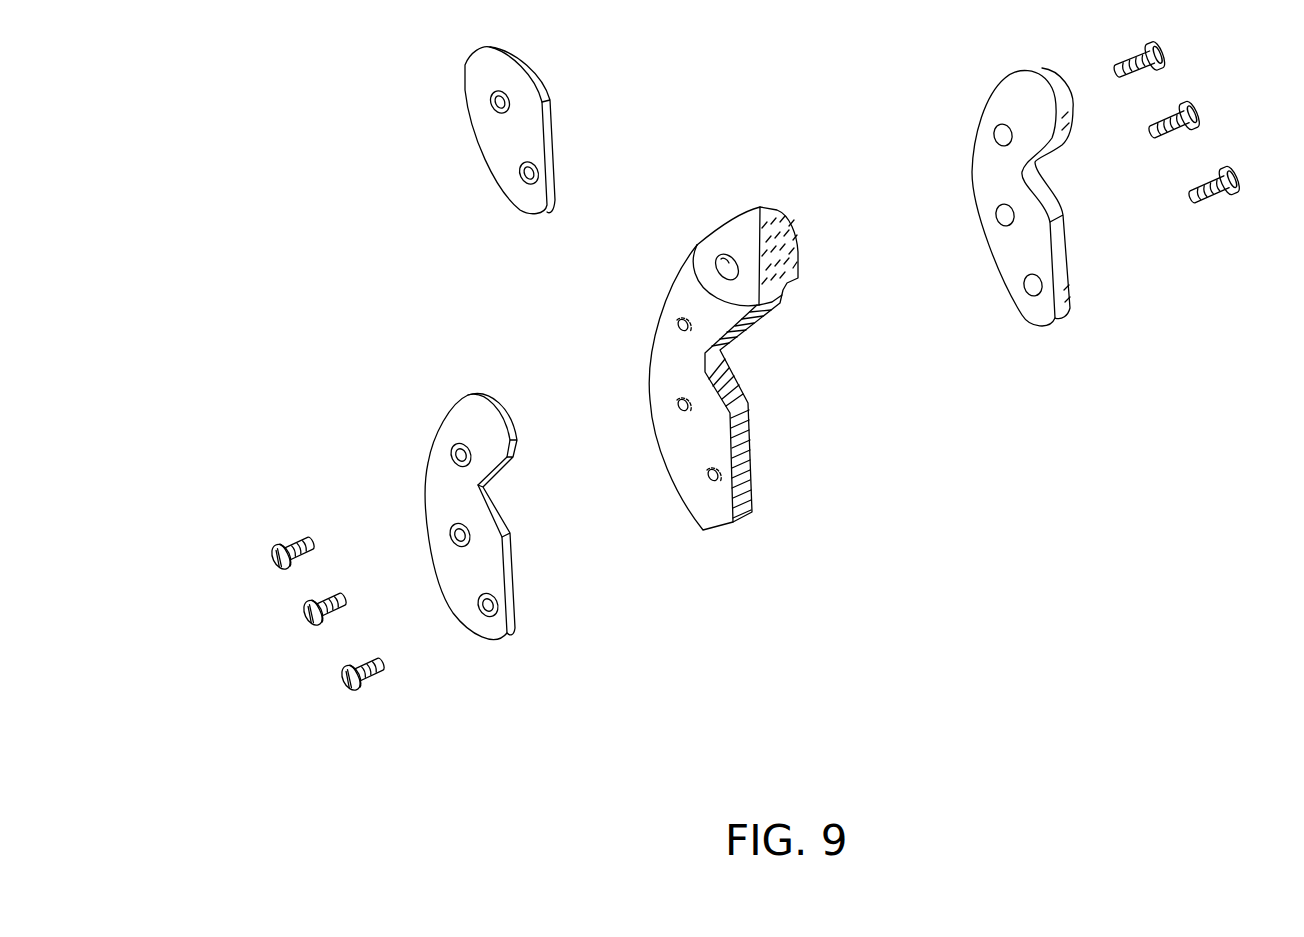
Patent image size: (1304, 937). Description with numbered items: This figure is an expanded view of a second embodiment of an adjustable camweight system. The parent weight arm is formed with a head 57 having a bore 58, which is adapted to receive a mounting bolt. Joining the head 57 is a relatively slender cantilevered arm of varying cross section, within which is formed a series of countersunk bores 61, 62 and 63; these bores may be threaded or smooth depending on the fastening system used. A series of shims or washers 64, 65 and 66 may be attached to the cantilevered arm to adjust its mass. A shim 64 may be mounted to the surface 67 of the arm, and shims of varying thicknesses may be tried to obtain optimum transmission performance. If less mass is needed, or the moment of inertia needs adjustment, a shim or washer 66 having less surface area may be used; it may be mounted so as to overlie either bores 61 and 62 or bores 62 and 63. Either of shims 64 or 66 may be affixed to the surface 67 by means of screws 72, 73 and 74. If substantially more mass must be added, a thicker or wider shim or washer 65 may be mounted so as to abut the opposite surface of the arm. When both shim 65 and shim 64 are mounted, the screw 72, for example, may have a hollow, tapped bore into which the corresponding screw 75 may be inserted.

The head 57 is at (752, 230).
The bore 58 is at (725, 258).
The countersunk bore 61 is at (720, 477).
The countersunk bore 62 is at (677, 405).
The countersunk bore 63 is at (676, 325).
The shim 64 is at (443, 470).
The shim 65 is at (1005, 95).
The shim 66 is at (484, 64).
The surface 67 is at (688, 443).
The screw 72 is at (377, 683).
The screw 73 is at (303, 627).
The screw 74 is at (293, 534).
The screw 75 is at (1203, 203).